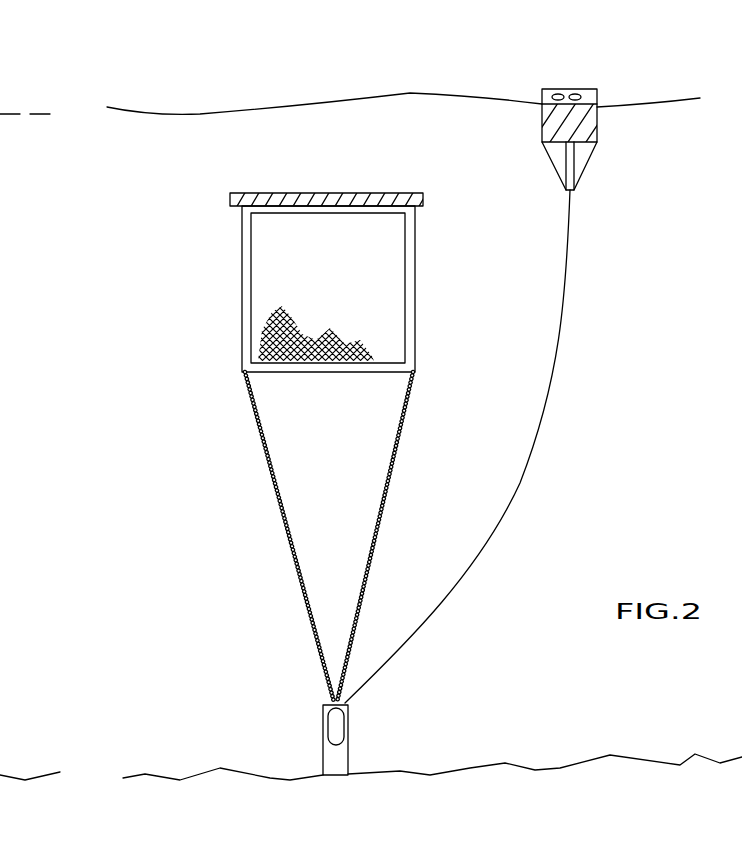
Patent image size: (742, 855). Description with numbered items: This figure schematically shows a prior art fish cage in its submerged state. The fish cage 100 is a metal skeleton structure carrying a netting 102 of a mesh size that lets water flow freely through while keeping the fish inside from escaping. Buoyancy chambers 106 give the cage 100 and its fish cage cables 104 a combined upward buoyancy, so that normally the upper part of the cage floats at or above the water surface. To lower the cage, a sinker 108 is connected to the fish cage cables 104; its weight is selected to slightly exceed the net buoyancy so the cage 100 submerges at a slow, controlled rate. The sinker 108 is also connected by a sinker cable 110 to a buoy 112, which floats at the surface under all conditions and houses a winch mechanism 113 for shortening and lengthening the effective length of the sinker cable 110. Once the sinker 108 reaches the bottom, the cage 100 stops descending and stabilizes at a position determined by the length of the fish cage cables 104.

The fish cage 100 is at (357, 287).
The netting 102 is at (266, 325).
The fish cage cables 104 is at (380, 495).
The buoyancy chambers 106 is at (313, 193).
The sinker 108 is at (350, 762).
The sinker cable 110 is at (564, 325).
The buoy 112 is at (585, 128).
The winch mechanism 113 is at (560, 90).